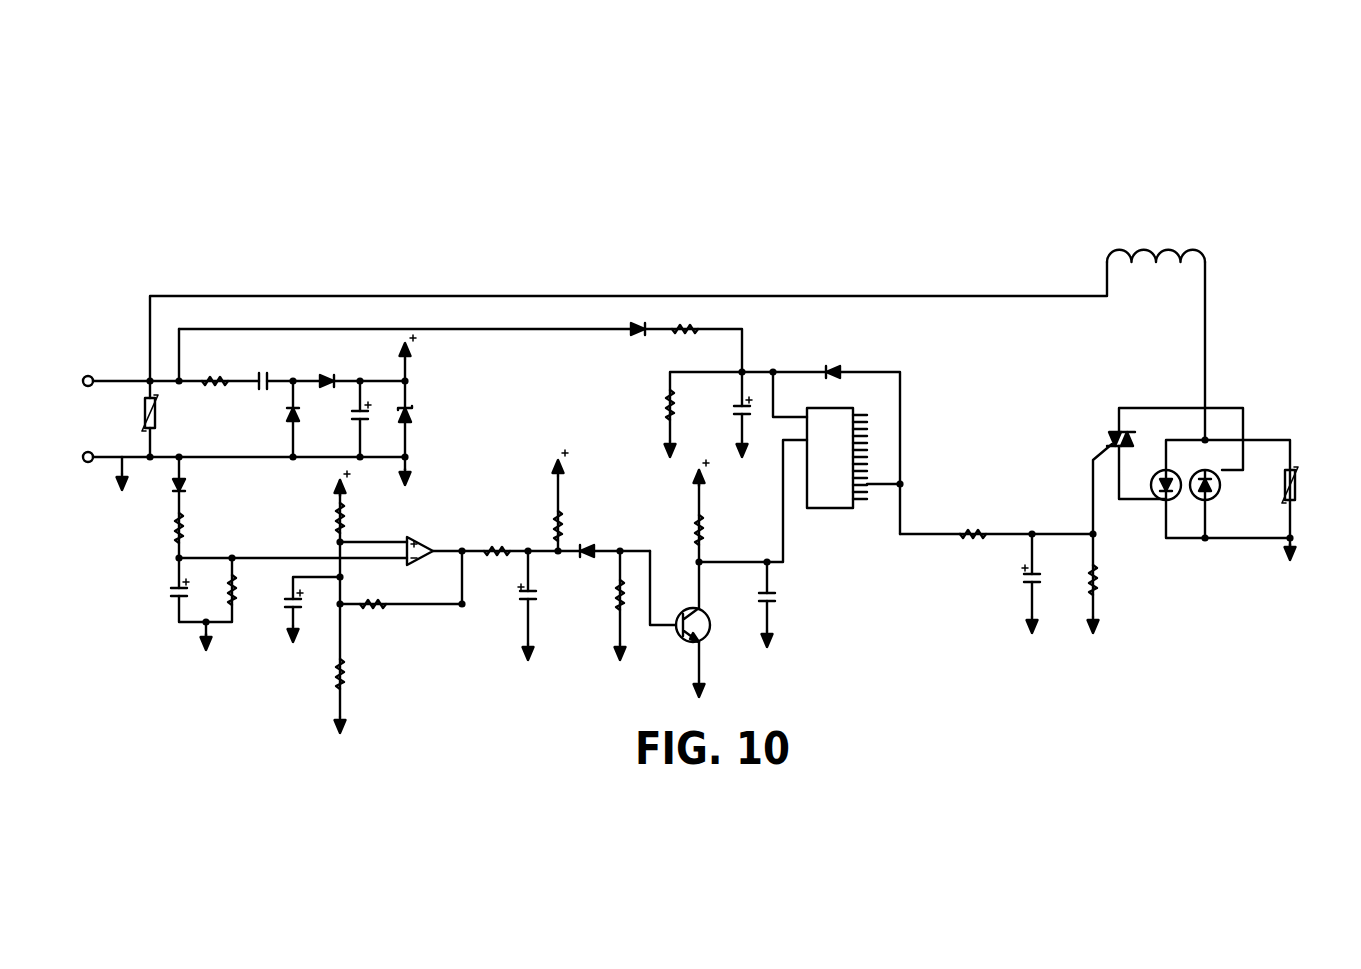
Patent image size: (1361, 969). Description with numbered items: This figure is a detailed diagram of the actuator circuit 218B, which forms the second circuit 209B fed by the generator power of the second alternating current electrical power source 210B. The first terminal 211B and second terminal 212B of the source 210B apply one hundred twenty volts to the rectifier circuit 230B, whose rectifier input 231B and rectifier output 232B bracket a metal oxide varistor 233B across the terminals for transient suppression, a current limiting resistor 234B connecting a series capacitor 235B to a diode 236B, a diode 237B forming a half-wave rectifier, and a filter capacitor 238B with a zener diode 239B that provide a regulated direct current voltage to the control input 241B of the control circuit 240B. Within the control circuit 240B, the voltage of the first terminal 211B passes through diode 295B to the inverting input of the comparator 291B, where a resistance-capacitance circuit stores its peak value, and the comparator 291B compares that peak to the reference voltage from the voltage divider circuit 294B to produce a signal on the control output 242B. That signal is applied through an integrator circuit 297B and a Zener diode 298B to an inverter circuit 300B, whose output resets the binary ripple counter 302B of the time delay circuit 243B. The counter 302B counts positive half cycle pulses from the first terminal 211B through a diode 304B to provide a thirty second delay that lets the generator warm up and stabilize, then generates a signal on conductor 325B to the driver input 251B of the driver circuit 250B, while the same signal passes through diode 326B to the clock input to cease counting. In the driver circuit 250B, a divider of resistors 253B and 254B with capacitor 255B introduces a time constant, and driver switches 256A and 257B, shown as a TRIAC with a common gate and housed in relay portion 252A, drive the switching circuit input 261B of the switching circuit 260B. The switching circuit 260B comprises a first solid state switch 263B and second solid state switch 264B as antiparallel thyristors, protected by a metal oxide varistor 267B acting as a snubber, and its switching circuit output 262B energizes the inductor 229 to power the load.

The second circuit 209B is at (252, 207).
The second alternating current electrical power source 210B is at (63, 309).
The first terminal 211B is at (82, 378).
The second terminal 212B is at (82, 460).
The actuator circuit 218B is at (852, 238).
The inductor 229 is at (1160, 252).
The rectifier circuit 230B is at (238, 280).
The rectifier input 231B is at (148, 378).
The rectifier output 232B is at (408, 381).
The metal oxide varistor 233B is at (147, 413).
The current limiting resistor 234B is at (213, 386).
The series capacitor 235B is at (268, 368).
The diode 236B is at (328, 376).
The diode 237B is at (290, 421).
The filter capacitor 238B is at (358, 419).
The zener diode 239B is at (411, 413).
The control circuit 240B is at (424, 496).
The control input 241B is at (343, 542).
The control output 242B is at (462, 548).
The time delay circuit 243B is at (965, 400).
The driver circuit 250B is at (1051, 362).
The driver input 251B is at (932, 536).
The solid state relay 252A is at (1119, 410).
The resistor 253B is at (977, 530).
The resistor 254B is at (1102, 586).
The capacitor 255B is at (1022, 584).
The triac 256A is at (1108, 437).
The second driver switch 257B is at (1130, 440).
The switching circuit 260B is at (1244, 580).
The switching circuit input 261B is at (1119, 406).
The switching circuit output 262B is at (1207, 436).
The first solid state switch 263B is at (1160, 502).
The second solid state switch 264B is at (1221, 488).
The metal oxide varistor 267B is at (1291, 468).
The comparator 291B is at (423, 556).
The voltage divider circuit 294B is at (340, 653).
The diode 295B is at (184, 485).
The integrator circuit 297B is at (526, 555).
The Zener diode 298B is at (586, 558).
The inverter circuit 300B is at (702, 640).
The binary ripple counter 302B is at (828, 509).
The diode 304B is at (637, 333).
The conductor 325B is at (898, 540).
The diode 326B is at (840, 367).